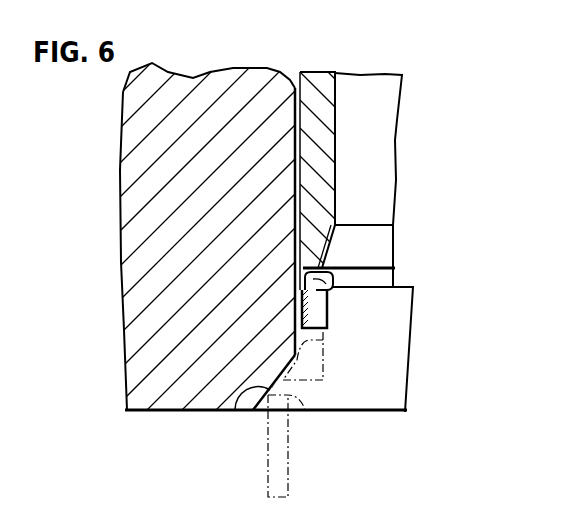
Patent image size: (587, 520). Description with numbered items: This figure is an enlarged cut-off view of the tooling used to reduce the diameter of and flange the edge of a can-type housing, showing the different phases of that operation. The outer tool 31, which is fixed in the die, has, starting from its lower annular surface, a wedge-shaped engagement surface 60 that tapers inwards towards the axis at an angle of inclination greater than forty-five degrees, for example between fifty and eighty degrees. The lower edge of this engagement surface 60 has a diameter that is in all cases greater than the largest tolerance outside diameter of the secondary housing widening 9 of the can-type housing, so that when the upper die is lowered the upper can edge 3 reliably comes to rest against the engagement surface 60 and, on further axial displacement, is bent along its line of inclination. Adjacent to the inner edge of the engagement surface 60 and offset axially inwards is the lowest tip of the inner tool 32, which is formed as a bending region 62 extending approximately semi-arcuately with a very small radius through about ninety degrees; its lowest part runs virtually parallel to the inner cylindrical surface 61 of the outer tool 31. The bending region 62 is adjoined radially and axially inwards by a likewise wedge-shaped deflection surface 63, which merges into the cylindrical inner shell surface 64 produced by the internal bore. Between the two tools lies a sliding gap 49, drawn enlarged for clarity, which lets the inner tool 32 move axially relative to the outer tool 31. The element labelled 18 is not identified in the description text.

The upper can edge 3 is at (306, 411).
The secondary housing widening 9 is at (268, 462).
The sealing plate 18 is at (335, 268).
The outer tool 31 is at (135, 194).
The inner tool 32 is at (322, 84).
The sliding gap 49 is at (291, 79).
The engagement surface 60 is at (237, 410).
The inner cylindrical surface 61 is at (295, 263).
The bending region 62 is at (333, 240).
The deflection surface 63 is at (385, 242).
The cylindrical inner shell surface 64 is at (337, 138).